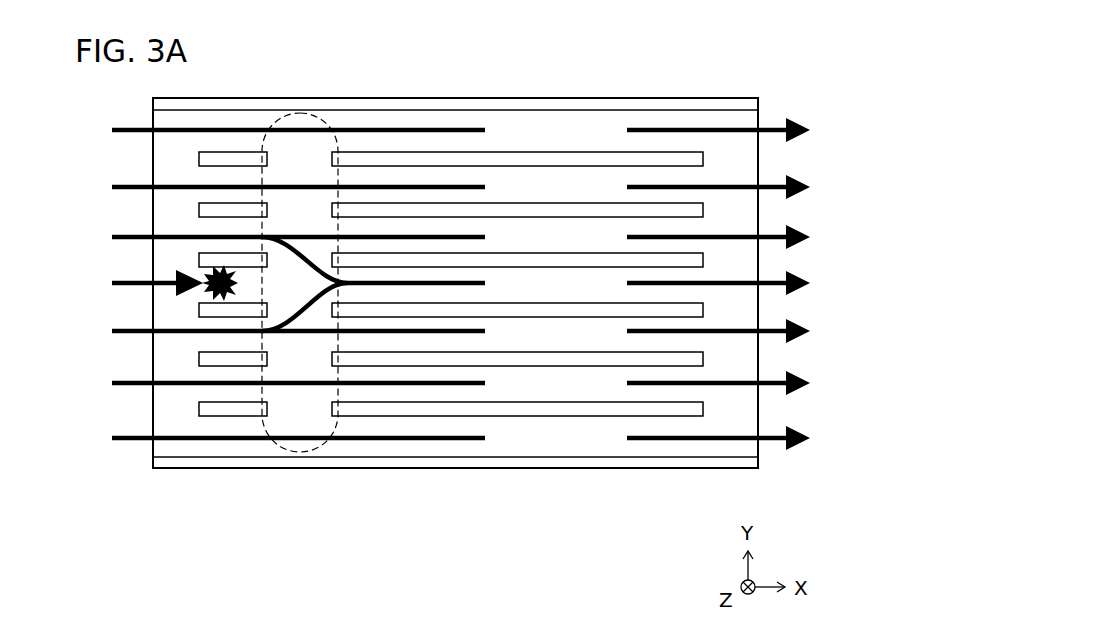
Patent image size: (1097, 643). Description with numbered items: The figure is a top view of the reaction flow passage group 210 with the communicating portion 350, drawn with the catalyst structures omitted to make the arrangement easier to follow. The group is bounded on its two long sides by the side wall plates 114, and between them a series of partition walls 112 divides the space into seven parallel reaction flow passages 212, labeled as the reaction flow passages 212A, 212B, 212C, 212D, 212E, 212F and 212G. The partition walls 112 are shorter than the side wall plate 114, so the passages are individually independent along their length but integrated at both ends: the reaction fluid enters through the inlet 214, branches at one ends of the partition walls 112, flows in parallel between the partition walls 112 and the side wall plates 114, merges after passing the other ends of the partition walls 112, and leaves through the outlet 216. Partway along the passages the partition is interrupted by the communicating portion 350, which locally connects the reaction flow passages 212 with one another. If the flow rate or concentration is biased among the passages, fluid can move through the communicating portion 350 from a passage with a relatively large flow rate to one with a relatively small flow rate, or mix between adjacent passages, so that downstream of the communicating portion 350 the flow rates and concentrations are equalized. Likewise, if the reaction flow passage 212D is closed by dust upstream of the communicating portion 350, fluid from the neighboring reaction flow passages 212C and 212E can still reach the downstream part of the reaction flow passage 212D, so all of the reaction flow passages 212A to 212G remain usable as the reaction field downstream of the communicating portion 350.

The reaction flow passage group 210 is at (553, 43).
The side wall plate 114 is at (679, 98).
The reaction flow passage 212 is at (461, 285).
The reaction flow passage 212A is at (618, 143).
The reaction flow passage 212B is at (618, 200).
The reaction flow passage 212C is at (618, 250).
The reaction flow passage 212D is at (618, 296).
The reaction flow passage 212E is at (618, 344).
The reaction flow passage 212F is at (618, 396).
The reaction flow passage 212G is at (618, 451).
The communicating portion 350 is at (302, 113).
The partition wall 112 is at (662, 366).
The inlet 214 is at (153, 153).
The outlet 216 is at (758, 162).